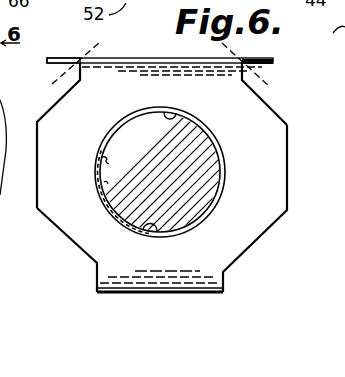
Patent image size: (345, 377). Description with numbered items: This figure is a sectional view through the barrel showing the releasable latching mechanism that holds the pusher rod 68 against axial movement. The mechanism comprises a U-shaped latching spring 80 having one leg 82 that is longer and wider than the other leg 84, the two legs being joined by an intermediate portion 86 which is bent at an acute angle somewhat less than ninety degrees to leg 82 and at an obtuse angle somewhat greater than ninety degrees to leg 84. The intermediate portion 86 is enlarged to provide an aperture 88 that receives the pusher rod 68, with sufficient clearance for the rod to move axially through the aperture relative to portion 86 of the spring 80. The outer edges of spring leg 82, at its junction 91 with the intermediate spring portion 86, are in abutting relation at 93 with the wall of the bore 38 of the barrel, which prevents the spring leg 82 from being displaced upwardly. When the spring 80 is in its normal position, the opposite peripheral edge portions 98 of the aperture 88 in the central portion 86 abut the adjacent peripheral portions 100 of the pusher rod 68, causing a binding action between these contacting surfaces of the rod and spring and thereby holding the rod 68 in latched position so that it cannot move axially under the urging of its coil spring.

The bore of the barrel 38 is at (244, 54).
The pusher rod 68 is at (100, 193).
The U-shaped latching spring 80 is at (279, 101).
The leg 82 is at (137, 30).
The leg 84 is at (163, 294).
The intermediate portion 86 is at (267, 123).
The aperture 88 is at (100, 158).
The junction 91 is at (147, 59).
The abutting relation 93 is at (75, 56).
The peripheral edge portions of the aperture 98 is at (186, 114).
The peripheral portions of the pusher rod 100 is at (160, 104).